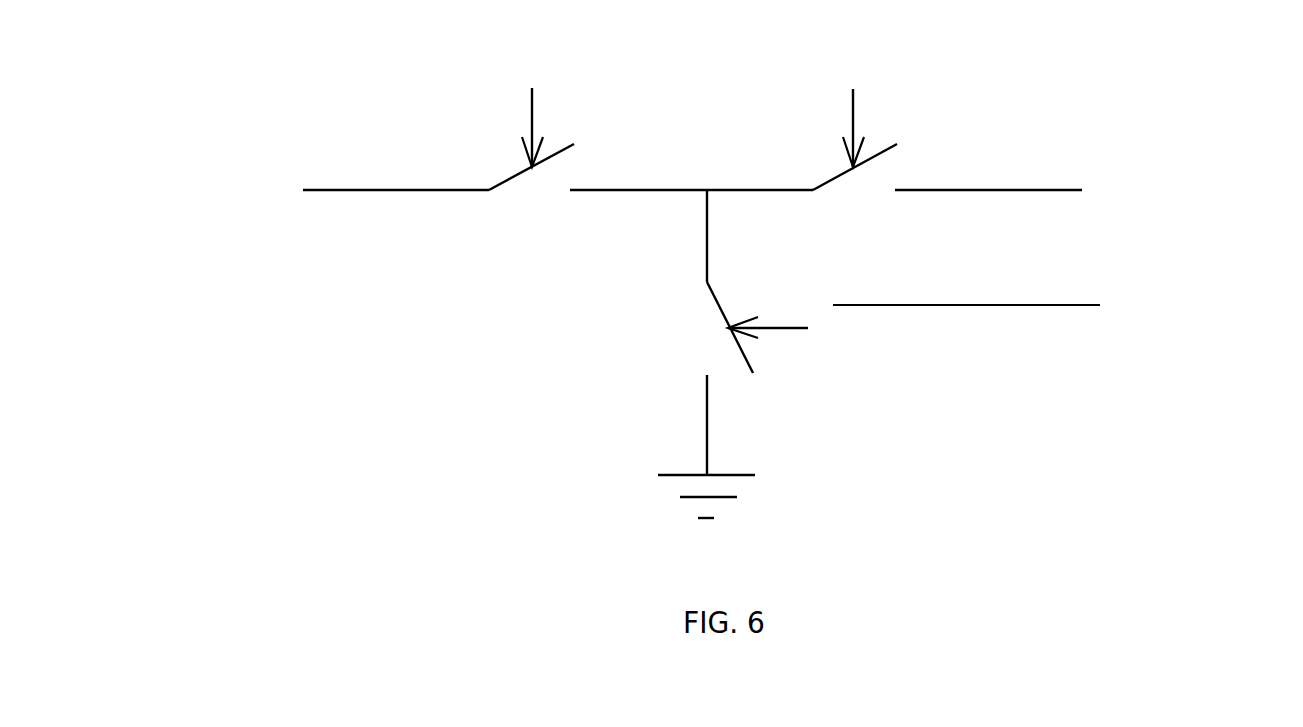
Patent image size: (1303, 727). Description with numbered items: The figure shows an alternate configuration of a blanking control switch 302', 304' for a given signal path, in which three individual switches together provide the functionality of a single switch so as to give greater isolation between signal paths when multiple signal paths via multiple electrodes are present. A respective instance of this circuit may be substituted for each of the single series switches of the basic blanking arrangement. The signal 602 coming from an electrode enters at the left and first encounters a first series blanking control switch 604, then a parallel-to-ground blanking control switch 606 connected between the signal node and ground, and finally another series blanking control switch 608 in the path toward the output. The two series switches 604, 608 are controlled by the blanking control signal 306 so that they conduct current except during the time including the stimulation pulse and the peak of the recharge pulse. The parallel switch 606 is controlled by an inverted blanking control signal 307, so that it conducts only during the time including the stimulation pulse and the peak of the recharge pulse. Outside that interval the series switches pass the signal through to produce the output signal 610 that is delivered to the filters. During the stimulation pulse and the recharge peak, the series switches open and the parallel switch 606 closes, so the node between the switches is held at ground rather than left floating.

The blanking control switch 302' is at (700, 273).
The blanking control switch 304' is at (756, 277).
The blanking control signal 306 is at (534, 108).
The inverted blanking control signal 307 is at (780, 330).
The signal 602 is at (230, 206).
The first series blanking control switch 604 is at (517, 178).
The parallel-to-ground blanking control switch 606 is at (720, 317).
The series blanking control switch 608 is at (838, 178).
The signal 610 is at (1152, 204).